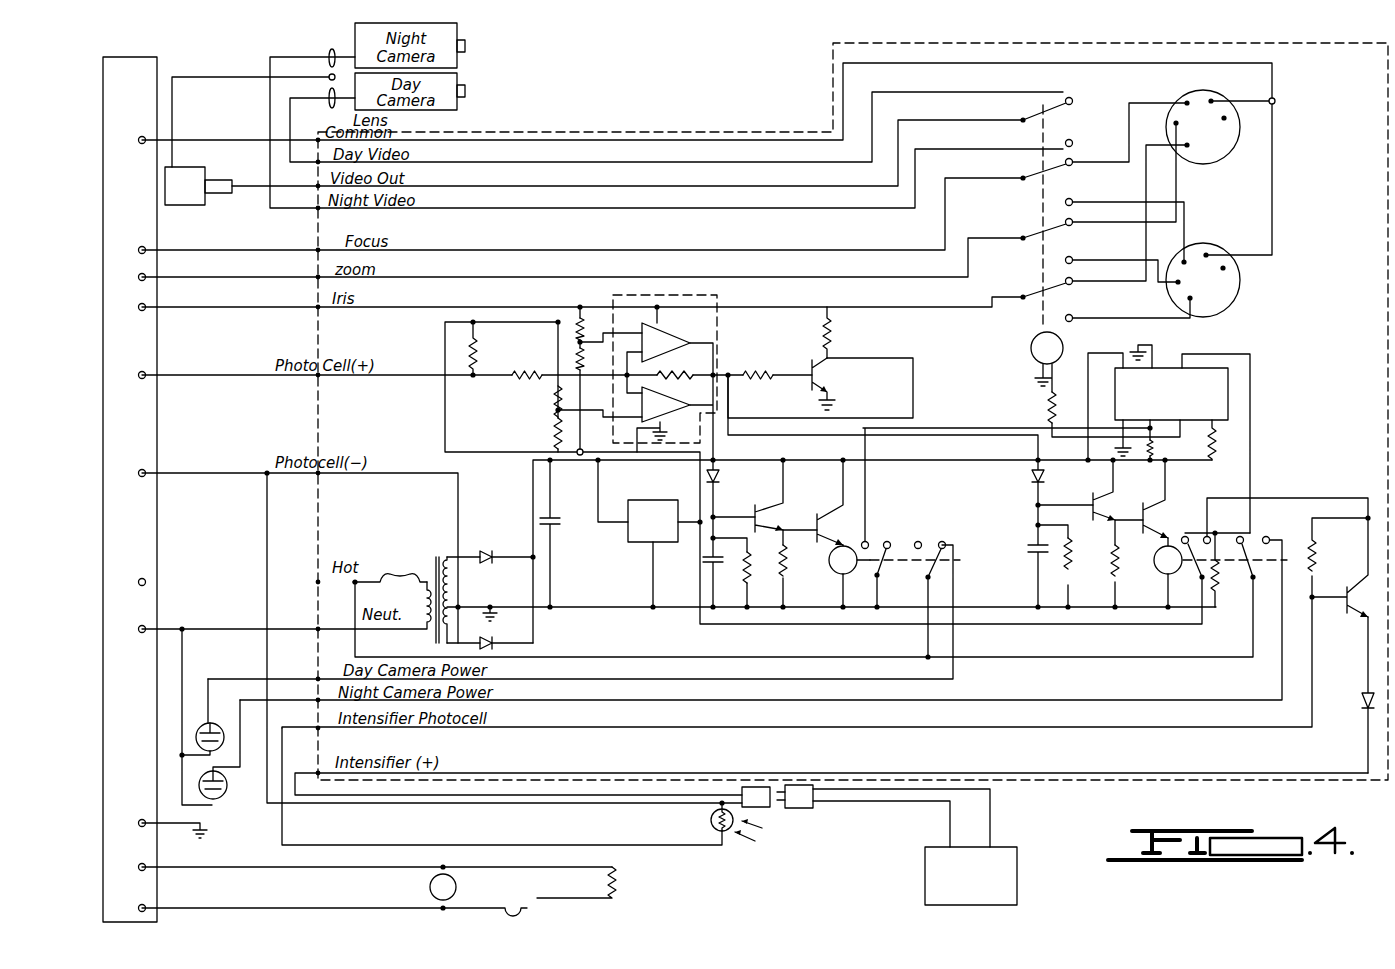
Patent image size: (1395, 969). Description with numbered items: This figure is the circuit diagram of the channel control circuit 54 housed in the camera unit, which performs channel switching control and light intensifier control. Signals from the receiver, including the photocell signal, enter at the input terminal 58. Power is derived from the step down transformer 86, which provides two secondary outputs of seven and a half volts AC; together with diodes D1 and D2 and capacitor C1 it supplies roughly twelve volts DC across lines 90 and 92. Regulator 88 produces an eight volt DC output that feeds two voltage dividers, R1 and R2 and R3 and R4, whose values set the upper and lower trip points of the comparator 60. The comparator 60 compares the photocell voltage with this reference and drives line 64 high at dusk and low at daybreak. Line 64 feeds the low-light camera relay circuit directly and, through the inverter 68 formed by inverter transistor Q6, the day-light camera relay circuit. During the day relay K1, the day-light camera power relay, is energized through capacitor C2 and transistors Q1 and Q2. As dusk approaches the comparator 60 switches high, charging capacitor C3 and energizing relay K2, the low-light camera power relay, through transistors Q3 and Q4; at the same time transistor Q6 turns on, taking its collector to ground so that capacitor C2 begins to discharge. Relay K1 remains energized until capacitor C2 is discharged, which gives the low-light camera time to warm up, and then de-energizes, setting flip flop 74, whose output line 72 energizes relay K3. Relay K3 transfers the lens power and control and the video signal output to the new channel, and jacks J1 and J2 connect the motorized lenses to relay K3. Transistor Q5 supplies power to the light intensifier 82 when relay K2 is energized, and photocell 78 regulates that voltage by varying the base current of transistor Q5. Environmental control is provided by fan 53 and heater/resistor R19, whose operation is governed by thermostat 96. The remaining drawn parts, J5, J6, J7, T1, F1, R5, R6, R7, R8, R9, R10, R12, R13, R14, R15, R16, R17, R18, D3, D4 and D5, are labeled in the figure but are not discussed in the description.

The channel control circuit 54 is at (1315, 191).
The input terminal 58 is at (130, 489).
The comparator 60 is at (735, 297).
The line 64 is at (722, 372).
The inverter 68 is at (838, 383).
The line 72 is at (1050, 420).
The flip flop 74 is at (1230, 392).
The photocell 78 is at (709, 820).
The light intensifier 82 is at (971, 876).
The step down transformer 86 is at (437, 578).
The regulator 88 is at (649, 533).
The line 90 is at (565, 463).
The line 92 is at (598, 605).
The thermostat 96 is at (548, 906).
The fan 53 is at (458, 887).
The jack J1 is at (1203, 127).
The jack J2 is at (1203, 280).
The power jack J5 is at (218, 722).
The power jack J6 is at (218, 797).
The video jack J7 is at (247, 141).
The power transformer T1 is at (311, 590).
The fuse F1 is at (397, 568).
The resistor R1 is at (578, 328).
The resistor R2 is at (578, 362).
The resistor R3 is at (556, 396).
The resistor R4 is at (508, 380).
The resistor R5 is at (757, 590).
The resistor R6 is at (794, 588).
The resistor R7 is at (1072, 560).
The resistor R8 is at (1120, 565).
The resistor R9 is at (1318, 560).
The resistor R10 is at (470, 345).
The resistor R12 is at (681, 384).
The resistor R13 is at (760, 368).
The resistor R14 is at (836, 337).
The resistor R15 is at (1158, 447).
The resistor R16 is at (1218, 445).
The resistor R17 is at (1222, 590).
The resistor R18 is at (1046, 405).
The heater/resistor R19 is at (620, 885).
The capacitor C1 is at (558, 522).
The capacitor C2 is at (706, 560).
The capacitor C3 is at (1035, 548).
The diode D1 is at (488, 550).
The diode D2 is at (489, 642).
The diode D3 is at (723, 477).
The diode D4 is at (1048, 477).
The diode D5 is at (1360, 701).
The transistor Q1 is at (781, 496).
The transistor Q2 is at (838, 502).
The transistor Q3 is at (1114, 490).
The transistor Q4 is at (1166, 499).
The transistor Q5 is at (1345, 567).
The inverter transistor Q6 is at (834, 384).
The relay K1 is at (843, 576).
The relay K2 is at (1168, 572).
The relay K3 is at (1047, 348).